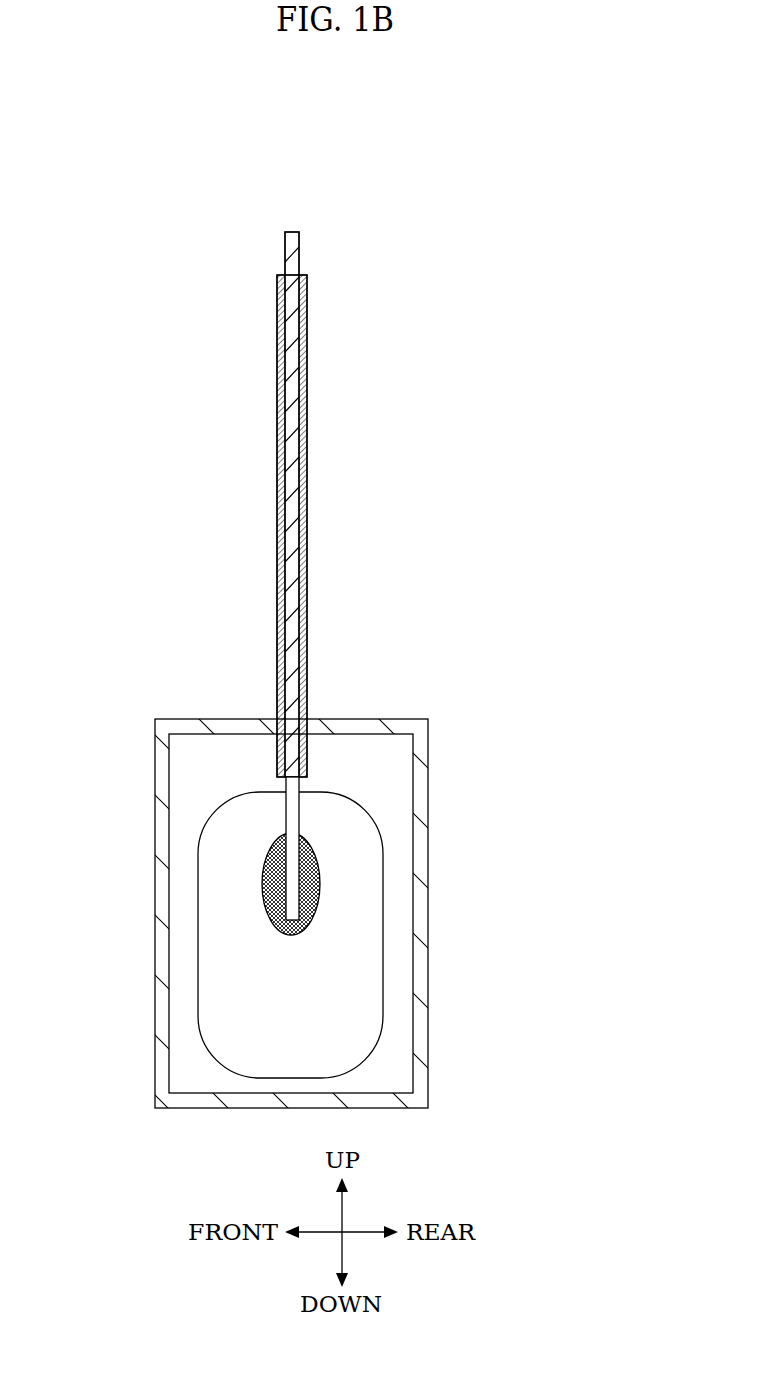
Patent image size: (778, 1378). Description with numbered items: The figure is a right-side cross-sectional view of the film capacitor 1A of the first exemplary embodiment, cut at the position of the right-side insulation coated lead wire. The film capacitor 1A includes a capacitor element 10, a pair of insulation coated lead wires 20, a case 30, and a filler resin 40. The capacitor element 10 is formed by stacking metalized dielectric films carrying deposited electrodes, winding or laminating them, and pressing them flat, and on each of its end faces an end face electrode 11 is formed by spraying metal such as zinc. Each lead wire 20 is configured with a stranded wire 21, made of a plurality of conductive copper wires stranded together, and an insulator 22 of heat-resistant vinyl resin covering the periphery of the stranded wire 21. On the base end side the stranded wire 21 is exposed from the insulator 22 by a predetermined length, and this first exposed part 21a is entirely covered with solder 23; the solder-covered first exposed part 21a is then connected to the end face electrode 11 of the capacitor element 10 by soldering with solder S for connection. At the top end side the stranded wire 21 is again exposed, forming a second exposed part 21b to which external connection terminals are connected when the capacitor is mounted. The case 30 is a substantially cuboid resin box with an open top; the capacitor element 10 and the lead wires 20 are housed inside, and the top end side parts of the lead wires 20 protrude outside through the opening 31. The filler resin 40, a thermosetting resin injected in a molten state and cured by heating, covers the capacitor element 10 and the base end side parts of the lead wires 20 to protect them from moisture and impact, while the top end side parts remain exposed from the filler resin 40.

The film capacitor 1A is at (164, 688).
The capacitor element 10 is at (200, 1053).
The end face electrode 11 is at (363, 1012).
The insulation coated lead wire 20 is at (308, 480).
The stranded wire 21 is at (297, 548).
The first exposed part 21a is at (300, 820).
The second exposed part 21b is at (298, 262).
The insulator 22 is at (308, 380).
The solder 23 is at (305, 777).
The case 30 is at (430, 897).
The opening 31 is at (323, 728).
The filler resin 40 is at (245, 770).
The solder for connection S is at (320, 907).